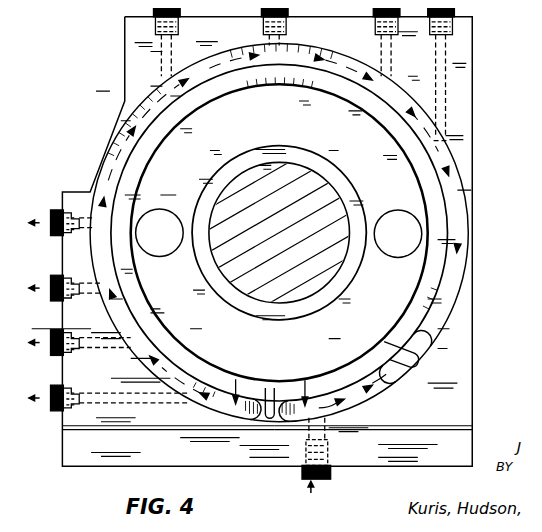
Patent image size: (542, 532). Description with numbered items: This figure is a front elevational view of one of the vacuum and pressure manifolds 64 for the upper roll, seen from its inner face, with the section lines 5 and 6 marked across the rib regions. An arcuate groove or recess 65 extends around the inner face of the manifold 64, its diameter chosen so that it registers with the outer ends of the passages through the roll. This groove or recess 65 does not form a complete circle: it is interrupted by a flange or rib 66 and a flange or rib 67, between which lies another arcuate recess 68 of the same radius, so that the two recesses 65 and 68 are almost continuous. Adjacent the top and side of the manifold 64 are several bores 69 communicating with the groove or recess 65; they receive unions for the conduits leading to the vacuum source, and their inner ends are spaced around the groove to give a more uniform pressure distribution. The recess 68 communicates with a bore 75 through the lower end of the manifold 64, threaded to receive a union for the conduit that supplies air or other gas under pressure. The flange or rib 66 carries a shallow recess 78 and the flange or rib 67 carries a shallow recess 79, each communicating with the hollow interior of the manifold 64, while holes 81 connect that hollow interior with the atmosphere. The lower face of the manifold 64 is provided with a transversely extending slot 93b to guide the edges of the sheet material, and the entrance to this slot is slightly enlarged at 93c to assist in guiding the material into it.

The channel wall 5 is at (419, 335).
The openings 6 is at (271, 382).
The manifold 64 is at (123, 110).
The arcuate groove or recess 65 is at (465, 253).
The flange or rib 66 is at (427, 352).
The flange or rib 67 is at (252, 417).
The recess 68 is at (365, 401).
The bores 69 is at (178, 45).
The bore 75 is at (333, 443).
The shallow recess 78 is at (393, 340).
The shallow recess 79 is at (270, 388).
The holes 81 is at (172, 210).
The transversely extending slots 93b is at (475, 430).
The enlarged entrance 93c is at (68, 434).